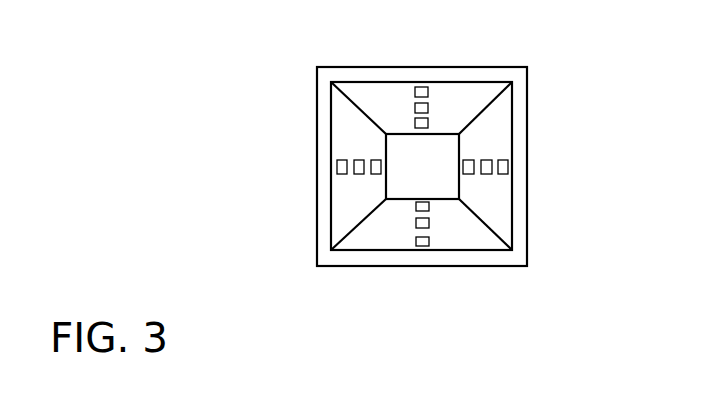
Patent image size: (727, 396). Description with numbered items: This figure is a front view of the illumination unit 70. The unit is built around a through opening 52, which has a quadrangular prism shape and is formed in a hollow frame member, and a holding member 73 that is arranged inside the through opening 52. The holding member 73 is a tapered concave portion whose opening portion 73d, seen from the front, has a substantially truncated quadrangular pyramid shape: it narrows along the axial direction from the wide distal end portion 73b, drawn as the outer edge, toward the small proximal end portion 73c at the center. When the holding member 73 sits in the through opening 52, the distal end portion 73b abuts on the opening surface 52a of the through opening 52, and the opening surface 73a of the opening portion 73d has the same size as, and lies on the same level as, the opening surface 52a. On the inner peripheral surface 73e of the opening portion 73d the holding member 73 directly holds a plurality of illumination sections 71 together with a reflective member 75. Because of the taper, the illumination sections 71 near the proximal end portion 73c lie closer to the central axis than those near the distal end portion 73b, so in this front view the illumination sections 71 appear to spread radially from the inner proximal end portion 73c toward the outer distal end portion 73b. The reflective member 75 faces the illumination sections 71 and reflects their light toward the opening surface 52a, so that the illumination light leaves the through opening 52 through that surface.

The illumination unit 70 is at (402, 174).
The illumination sections 71 is at (418, 87).
The through opening 52 is at (372, 166).
The holding member 73 is at (317, 202).
The opening surface of the opening portion 73a is at (408, 252).
The opening surface of the through opening 52a is at (421, 278).
The distal end portion 73b is at (335, 267).
The proximal end portion 73c is at (468, 143).
The opening portion 73d is at (363, 242).
The inner peripheral surface 73e is at (483, 242).
The reflective member 75 is at (500, 212).